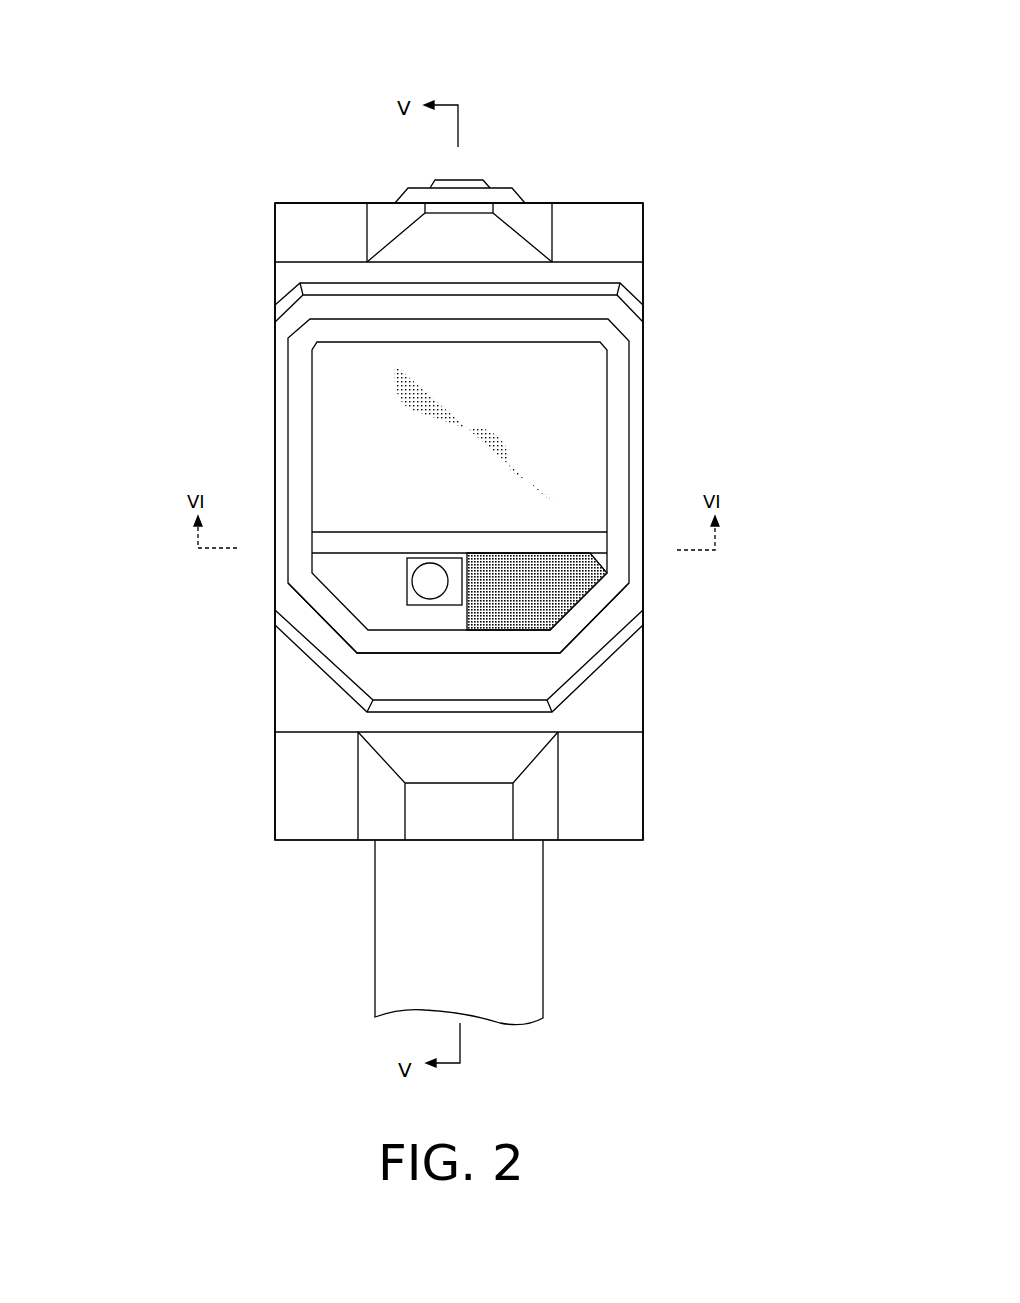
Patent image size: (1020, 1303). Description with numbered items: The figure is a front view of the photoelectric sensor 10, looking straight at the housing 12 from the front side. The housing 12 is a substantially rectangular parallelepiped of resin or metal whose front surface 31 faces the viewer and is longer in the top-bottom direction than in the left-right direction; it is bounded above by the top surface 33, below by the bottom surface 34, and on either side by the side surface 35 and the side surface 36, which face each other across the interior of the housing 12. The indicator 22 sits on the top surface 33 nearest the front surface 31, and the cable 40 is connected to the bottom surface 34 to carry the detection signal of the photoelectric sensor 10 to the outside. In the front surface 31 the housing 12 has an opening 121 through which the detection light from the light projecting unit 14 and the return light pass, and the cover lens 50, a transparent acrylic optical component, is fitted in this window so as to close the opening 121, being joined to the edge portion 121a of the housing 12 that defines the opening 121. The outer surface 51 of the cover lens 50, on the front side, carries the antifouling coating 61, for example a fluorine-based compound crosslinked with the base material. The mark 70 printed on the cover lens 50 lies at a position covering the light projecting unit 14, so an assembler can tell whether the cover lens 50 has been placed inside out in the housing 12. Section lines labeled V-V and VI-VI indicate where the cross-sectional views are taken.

The photoelectric sensor 10 is at (132, 53).
The housing 12 is at (273, 212).
The light projecting unit 14 is at (422, 582).
The indicator 22 is at (493, 188).
The front surface 31 is at (412, 679).
The top surface 33 is at (335, 202).
The bottom surface 34 is at (568, 841).
The side surface 35 is at (643, 420).
The side surface 36 is at (275, 420).
The cable 40 is at (410, 955).
The cover lens 50 is at (553, 420).
The outer surface 51 is at (583, 430).
The antifouling coating 61 is at (378, 455).
The mark 70 is at (540, 573).
The opening 121 is at (500, 320).
The edge portion 121a is at (610, 338).